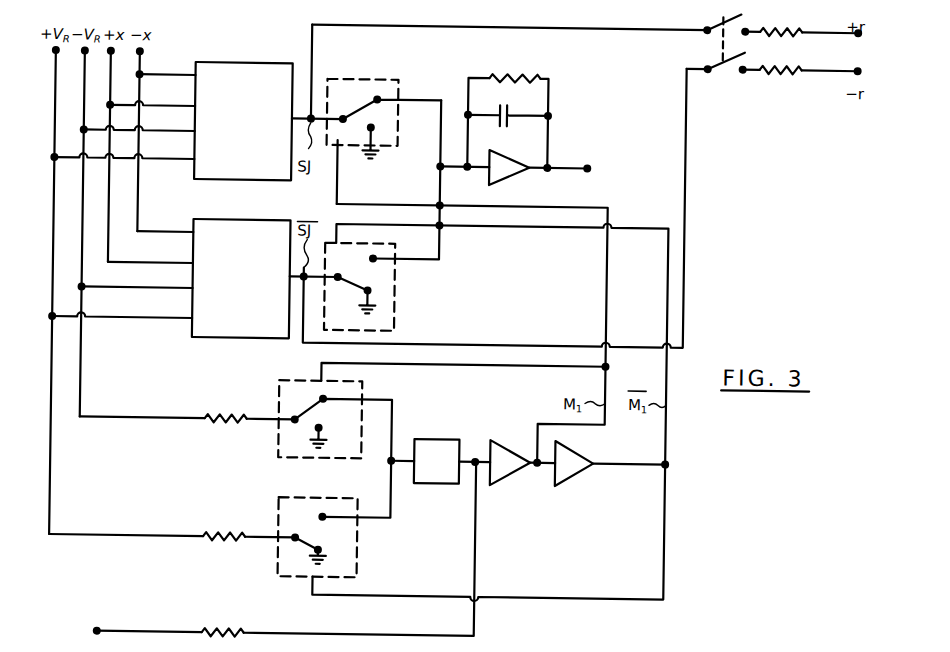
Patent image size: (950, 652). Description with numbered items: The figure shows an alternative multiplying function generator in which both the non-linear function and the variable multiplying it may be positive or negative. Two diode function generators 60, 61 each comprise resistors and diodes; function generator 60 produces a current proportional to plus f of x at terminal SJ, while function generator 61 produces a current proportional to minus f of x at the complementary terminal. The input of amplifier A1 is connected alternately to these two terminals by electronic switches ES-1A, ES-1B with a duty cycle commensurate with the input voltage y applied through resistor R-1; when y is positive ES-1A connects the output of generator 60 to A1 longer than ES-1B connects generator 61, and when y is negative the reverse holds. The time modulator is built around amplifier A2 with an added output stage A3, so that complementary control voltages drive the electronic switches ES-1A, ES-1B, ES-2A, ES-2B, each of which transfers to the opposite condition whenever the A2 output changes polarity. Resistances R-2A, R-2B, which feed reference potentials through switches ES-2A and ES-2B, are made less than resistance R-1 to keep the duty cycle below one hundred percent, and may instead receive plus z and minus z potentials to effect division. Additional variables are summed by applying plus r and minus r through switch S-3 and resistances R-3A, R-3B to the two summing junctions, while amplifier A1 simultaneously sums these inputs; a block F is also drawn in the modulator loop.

The diode function generator 60 is at (237, 66).
The diode function generator 61 is at (239, 223).
The electronic switch ES-1A is at (337, 81).
The electronic switch ES-1B is at (395, 306).
The electronic switch ES-2A is at (281, 450).
The electronic switch ES-2B is at (281, 563).
The switch S-3 is at (736, 14).
The resistor R-1 is at (275, 553).
The resistance R-2A is at (187, 408).
The resistance R-2B is at (172, 526).
The resistance R-3A is at (801, 22).
The resistance R-3B is at (800, 86).
The amplifier A1 is at (516, 129).
The amplifier A2 is at (523, 463).
The output stage A3 is at (612, 464).
The filter F is at (439, 461).